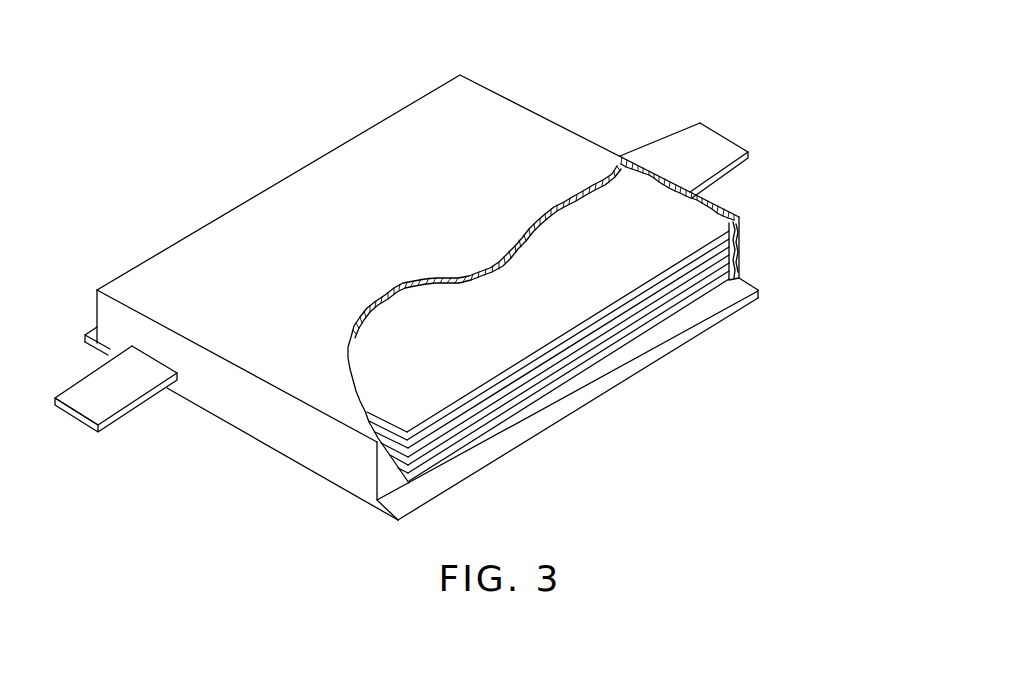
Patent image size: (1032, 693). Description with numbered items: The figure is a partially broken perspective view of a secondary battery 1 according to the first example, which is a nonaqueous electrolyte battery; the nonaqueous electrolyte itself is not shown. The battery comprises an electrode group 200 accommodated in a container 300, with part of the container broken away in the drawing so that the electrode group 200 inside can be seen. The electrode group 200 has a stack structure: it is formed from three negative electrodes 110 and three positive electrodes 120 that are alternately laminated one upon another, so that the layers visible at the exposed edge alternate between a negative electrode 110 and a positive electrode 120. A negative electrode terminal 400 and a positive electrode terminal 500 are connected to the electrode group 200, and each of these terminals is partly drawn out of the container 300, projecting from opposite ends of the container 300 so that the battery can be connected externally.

The secondary battery 1 is at (205, 202).
The negative electrode 110 is at (716, 232).
The positive electrode 120 is at (724, 243).
The electrode group 200 is at (629, 319).
The container 300 is at (379, 143).
The negative electrode terminal 400 is at (710, 148).
The positive electrode terminal 500 is at (126, 412).